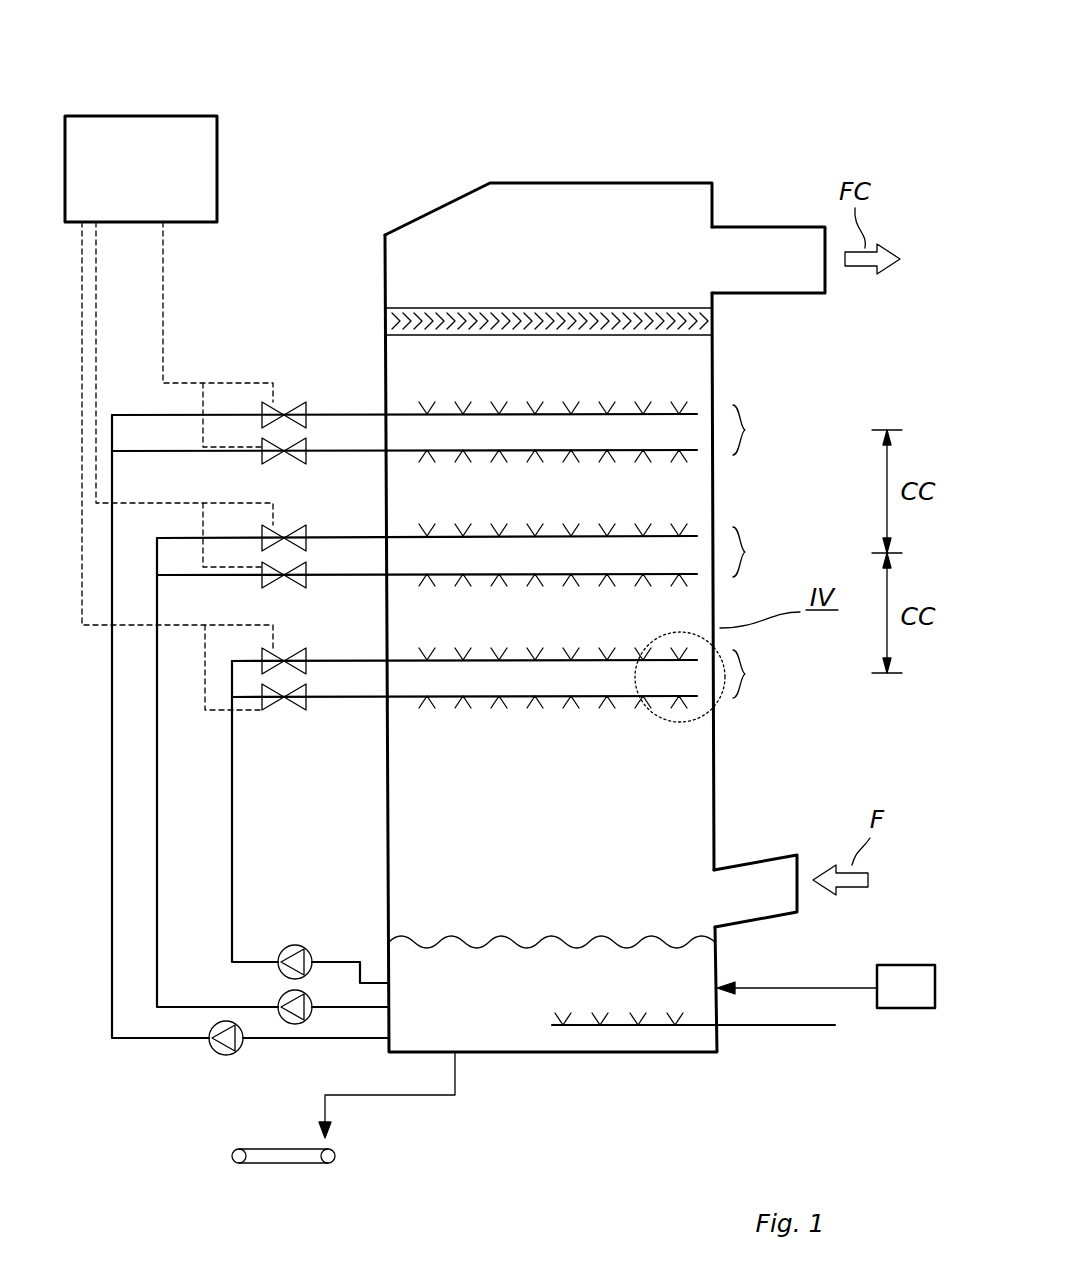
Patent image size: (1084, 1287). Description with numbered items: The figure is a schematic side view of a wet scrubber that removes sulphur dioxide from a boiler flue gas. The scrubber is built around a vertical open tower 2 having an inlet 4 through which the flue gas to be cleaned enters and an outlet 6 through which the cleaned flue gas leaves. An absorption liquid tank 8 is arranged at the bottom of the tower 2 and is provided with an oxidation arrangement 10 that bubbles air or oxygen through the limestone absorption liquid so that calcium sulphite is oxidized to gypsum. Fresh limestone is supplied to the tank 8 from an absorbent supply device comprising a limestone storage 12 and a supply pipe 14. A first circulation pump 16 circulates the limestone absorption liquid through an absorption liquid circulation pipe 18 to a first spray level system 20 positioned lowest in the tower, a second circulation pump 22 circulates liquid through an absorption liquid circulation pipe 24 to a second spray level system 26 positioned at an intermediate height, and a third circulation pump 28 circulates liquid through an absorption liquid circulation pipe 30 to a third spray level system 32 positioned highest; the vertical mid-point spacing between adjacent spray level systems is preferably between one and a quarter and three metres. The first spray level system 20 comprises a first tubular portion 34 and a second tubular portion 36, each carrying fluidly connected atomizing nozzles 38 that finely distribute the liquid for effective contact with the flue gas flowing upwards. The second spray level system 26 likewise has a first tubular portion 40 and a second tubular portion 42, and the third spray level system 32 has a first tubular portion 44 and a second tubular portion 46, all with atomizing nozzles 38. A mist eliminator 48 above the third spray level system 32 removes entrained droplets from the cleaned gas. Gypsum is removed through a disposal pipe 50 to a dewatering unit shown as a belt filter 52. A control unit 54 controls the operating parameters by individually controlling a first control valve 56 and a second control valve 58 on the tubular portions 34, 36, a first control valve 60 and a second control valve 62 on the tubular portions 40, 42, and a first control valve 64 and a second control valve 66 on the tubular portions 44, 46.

The vertical open tower 2 is at (718, 787).
The inlet 4 is at (775, 855).
The outlet 6 is at (780, 227).
The absorption liquid tank 8 is at (718, 1004).
The oxidation arrangement 10 is at (785, 1028).
The limestone storage 12 is at (915, 965).
The supply pipe 14 is at (834, 988).
The first circulation pump 16 is at (300, 945).
The absorption liquid circulation pipe 18 is at (232, 830).
The first spray level system 20 is at (756, 674).
The second circulation pump 22 is at (278, 1003).
The absorption liquid circulation pipe 24 is at (157, 790).
The second spray level system 26 is at (756, 552).
The third circulation pump 28 is at (210, 1050).
The absorption liquid circulation pipe 30 is at (112, 785).
The third spray level system 32 is at (756, 430).
The first tubular portion 34 is at (402, 700).
The second tubular portion 36 is at (405, 658).
The atomizing nozzles 38 is at (608, 411).
The first tubular portion 40 is at (520, 578).
The second tubular portion 42 is at (556, 535).
The first tubular portion 44 is at (487, 455).
The second tubular portion 46 is at (520, 413).
The mist eliminator 48 is at (592, 308).
The disposal pipe 50 is at (414, 1095).
The belt filter 52 is at (290, 1165).
The control unit 54 is at (218, 167).
The first control valve 56 is at (280, 710).
The second control valve 58 is at (306, 656).
The first control valve 60 is at (262, 586).
The second control valve 62 is at (306, 530).
The first control valve 64 is at (306, 462).
The second control valve 66 is at (285, 402).